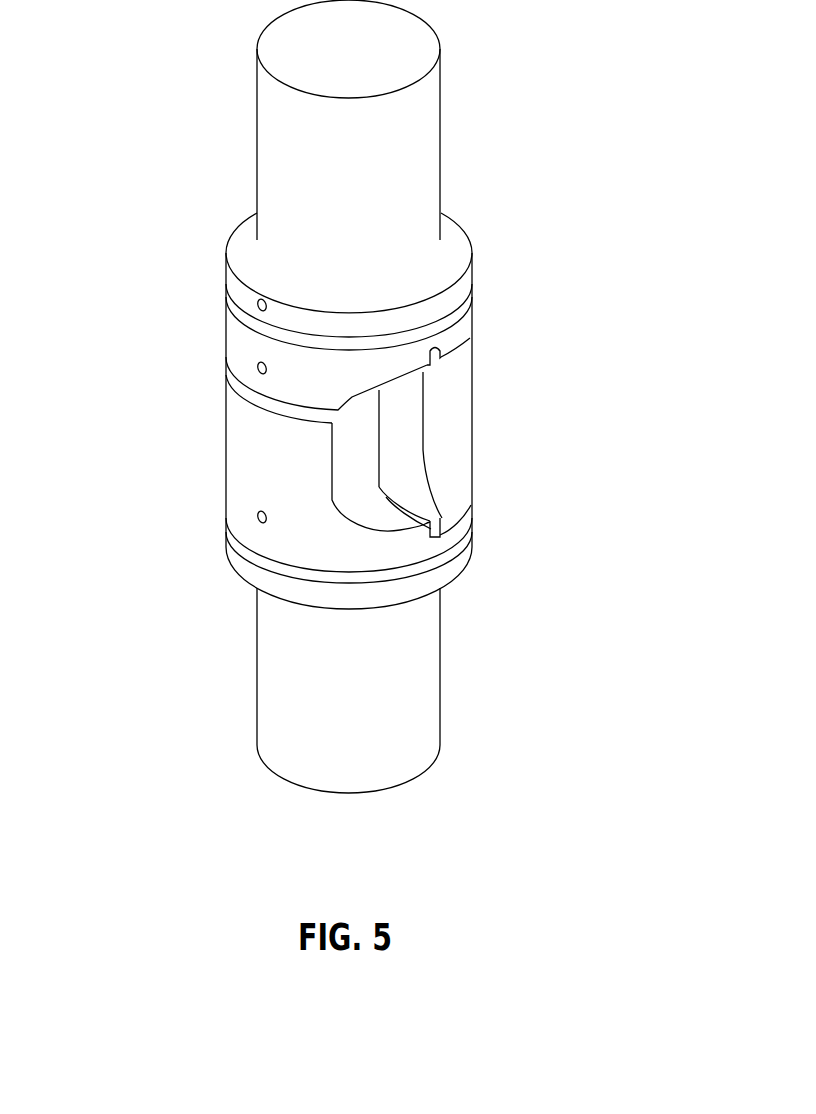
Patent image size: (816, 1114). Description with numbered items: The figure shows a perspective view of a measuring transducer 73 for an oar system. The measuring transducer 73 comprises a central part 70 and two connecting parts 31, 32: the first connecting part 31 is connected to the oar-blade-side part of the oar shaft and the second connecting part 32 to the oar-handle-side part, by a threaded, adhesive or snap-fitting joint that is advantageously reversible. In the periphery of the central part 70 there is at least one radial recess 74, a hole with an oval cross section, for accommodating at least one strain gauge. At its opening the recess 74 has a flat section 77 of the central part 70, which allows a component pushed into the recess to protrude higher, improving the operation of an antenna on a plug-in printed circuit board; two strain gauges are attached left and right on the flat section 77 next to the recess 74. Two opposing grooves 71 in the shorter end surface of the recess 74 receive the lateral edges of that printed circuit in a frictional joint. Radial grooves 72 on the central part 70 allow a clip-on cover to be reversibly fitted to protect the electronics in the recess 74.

The first connecting part 31 is at (430, 685).
The second connecting part 32 is at (431, 150).
The central part 70 is at (467, 318).
The grooves 71 is at (438, 356).
The radial grooves 72 is at (284, 403).
The measuring transducer 73 is at (354, 411).
The radial recess 74 is at (395, 434).
The flat section 77 is at (358, 487).